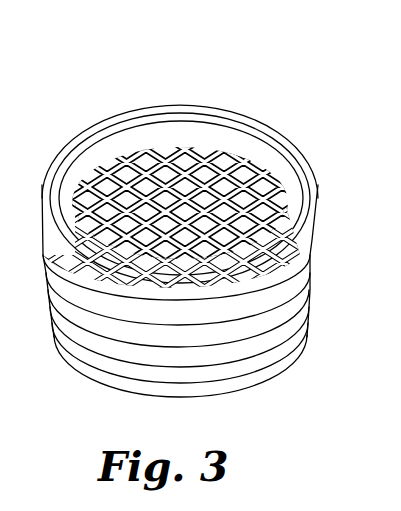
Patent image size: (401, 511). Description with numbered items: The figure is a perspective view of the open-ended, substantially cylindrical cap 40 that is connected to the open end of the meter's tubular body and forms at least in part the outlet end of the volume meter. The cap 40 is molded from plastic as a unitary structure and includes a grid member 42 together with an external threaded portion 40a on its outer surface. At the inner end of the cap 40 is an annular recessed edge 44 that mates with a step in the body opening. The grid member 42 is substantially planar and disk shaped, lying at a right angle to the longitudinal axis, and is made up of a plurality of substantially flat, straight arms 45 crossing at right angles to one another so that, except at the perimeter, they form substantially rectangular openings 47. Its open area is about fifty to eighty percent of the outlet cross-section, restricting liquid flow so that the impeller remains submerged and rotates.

The cap 40 is at (281, 118).
The external threaded portion 40a is at (273, 343).
The grid member 42 is at (145, 165).
The annular recessed edge 44 is at (311, 193).
The arms 45 is at (207, 187).
The rectangular openings 47 is at (101, 187).